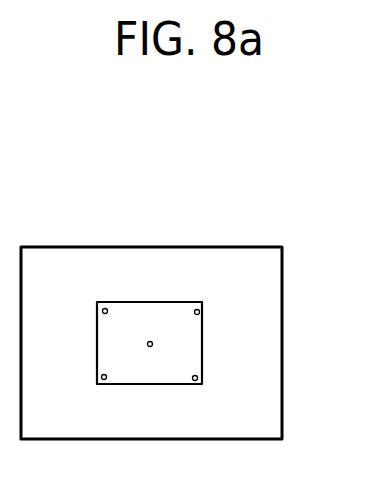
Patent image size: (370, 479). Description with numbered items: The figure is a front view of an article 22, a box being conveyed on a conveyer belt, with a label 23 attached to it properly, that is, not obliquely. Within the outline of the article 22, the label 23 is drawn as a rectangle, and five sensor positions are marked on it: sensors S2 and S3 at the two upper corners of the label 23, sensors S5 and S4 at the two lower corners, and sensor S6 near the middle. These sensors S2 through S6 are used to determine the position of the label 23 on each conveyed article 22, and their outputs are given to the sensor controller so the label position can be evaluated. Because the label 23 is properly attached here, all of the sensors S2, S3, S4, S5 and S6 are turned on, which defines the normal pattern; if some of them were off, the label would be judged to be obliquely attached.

The article 22 is at (283, 343).
The label 23 is at (149, 300).
The sensor S2 is at (104, 306).
The sensor S3 is at (200, 311).
The sensor S4 is at (198, 378).
The sensor S5 is at (101, 377).
The sensor S6 is at (151, 347).